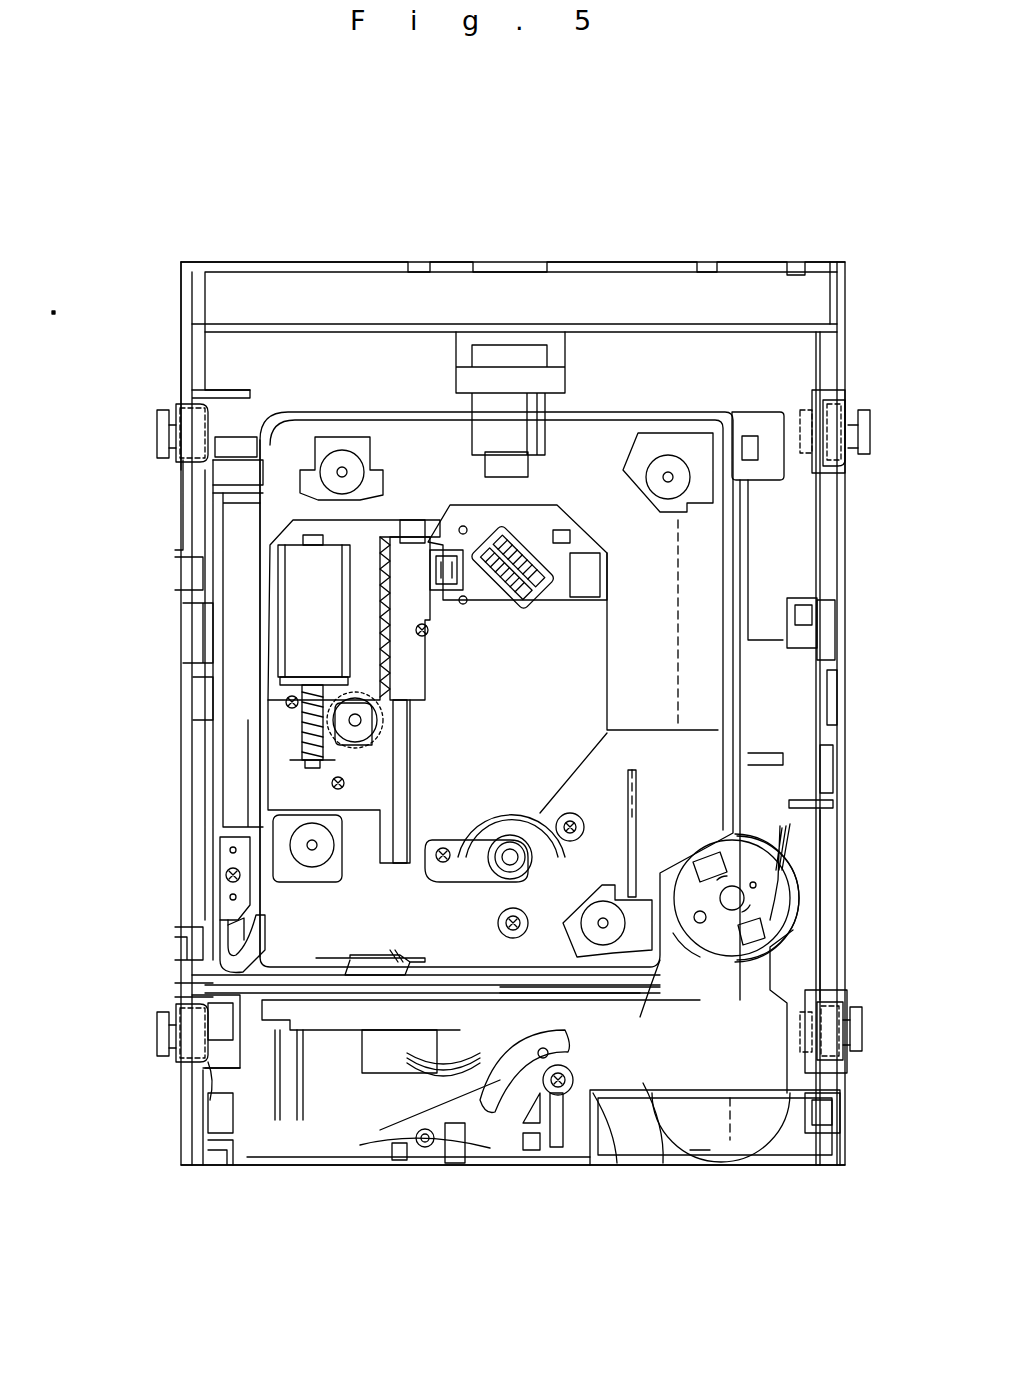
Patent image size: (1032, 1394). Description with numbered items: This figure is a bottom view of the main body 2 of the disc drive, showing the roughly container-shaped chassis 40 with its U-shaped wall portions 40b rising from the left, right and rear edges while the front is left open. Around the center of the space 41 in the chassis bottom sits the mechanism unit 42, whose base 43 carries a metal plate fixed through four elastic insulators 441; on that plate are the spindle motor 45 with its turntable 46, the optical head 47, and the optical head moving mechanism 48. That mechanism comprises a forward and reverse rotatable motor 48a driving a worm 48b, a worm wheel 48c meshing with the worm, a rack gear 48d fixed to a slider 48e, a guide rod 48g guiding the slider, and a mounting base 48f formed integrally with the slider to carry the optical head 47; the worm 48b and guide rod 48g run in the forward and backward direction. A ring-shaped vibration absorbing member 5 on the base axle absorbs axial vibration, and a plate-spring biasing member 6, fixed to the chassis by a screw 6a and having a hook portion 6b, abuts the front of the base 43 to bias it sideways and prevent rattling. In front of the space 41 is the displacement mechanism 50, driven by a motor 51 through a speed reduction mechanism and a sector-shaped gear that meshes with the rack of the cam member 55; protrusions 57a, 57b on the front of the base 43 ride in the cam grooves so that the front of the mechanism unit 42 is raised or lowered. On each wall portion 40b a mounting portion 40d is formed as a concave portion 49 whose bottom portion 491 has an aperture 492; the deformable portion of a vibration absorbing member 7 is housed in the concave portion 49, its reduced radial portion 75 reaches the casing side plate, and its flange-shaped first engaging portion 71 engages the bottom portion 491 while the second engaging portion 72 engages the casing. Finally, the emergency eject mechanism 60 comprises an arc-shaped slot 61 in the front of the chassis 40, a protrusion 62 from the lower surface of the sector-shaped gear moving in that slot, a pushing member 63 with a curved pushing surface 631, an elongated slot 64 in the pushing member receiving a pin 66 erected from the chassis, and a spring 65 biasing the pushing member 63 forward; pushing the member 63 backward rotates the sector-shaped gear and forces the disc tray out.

The main body 2 is at (602, 218).
The vibration absorbing member 5 is at (268, 440).
The biasing member 6 is at (262, 963).
The screw 6a is at (233, 876).
The lever hook 6b is at (242, 912).
The vibration absorbing member 7 is at (158, 433).
The chassis 40 is at (662, 262).
The wall portions 40b is at (232, 656).
The mounting portions 40d is at (170, 455).
The space 41 is at (725, 822).
The mechanism unit 42 is at (605, 412).
The base 43 is at (710, 678).
The spindle motor 45 is at (505, 822).
The turntable 46 is at (500, 795).
The optical head 47 is at (505, 545).
The optical head moving mechanism 48 is at (297, 740).
The motor 48a is at (300, 610).
The worm 48b is at (300, 726).
The worm wheel 48c is at (372, 728).
The rack gear 48d is at (395, 640).
The slider 48e is at (440, 597).
The mounting base 48f is at (530, 600).
The guide rod 48g is at (400, 782).
The concave portion 49 is at (827, 410).
The displacement mechanism 50 is at (703, 1133).
The motor 51 is at (772, 890).
The cam member 55 is at (432, 985).
The protrusion 57a is at (404, 962).
The protrusion 57b is at (548, 965).
The emergency eject mechanism 60 is at (520, 1165).
The arc-shaped slot 61 is at (480, 1093).
The protrusion 62 is at (548, 1055).
The pushing member 63 is at (583, 1130).
The elongated slot 64 is at (553, 1130).
The spring 65 is at (490, 1150).
The pin 66 is at (575, 1085).
The first engaging portion 71 is at (805, 418).
The second engaging portion 72 is at (160, 410).
The reduced radial portion 75 is at (182, 405).
The insulators 441 is at (345, 470).
The bottom portion 491 is at (215, 437).
The aperture 492 is at (812, 400).
The curved pushing surface 631 is at (445, 1148).